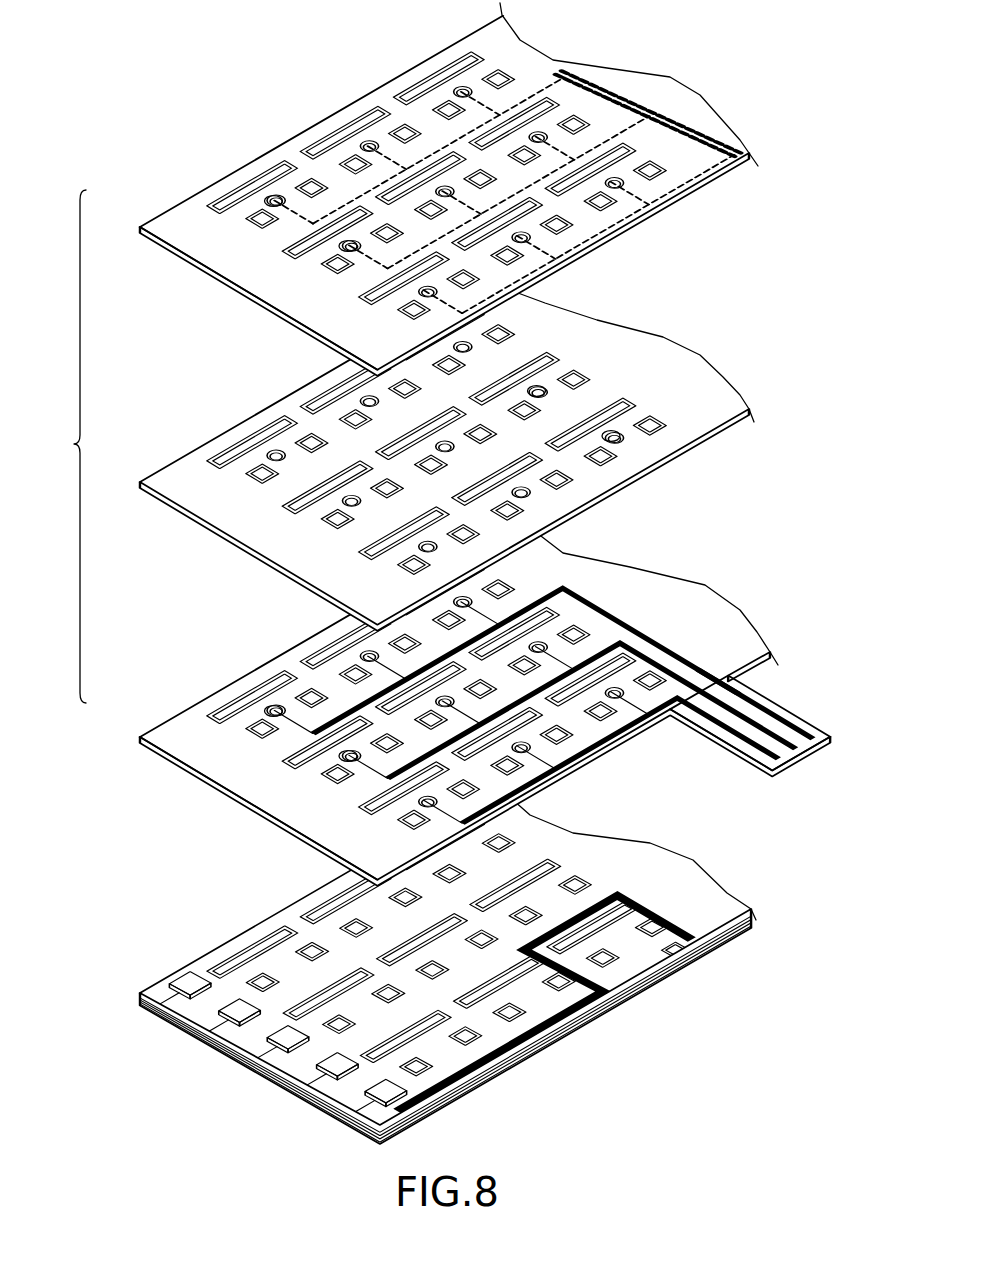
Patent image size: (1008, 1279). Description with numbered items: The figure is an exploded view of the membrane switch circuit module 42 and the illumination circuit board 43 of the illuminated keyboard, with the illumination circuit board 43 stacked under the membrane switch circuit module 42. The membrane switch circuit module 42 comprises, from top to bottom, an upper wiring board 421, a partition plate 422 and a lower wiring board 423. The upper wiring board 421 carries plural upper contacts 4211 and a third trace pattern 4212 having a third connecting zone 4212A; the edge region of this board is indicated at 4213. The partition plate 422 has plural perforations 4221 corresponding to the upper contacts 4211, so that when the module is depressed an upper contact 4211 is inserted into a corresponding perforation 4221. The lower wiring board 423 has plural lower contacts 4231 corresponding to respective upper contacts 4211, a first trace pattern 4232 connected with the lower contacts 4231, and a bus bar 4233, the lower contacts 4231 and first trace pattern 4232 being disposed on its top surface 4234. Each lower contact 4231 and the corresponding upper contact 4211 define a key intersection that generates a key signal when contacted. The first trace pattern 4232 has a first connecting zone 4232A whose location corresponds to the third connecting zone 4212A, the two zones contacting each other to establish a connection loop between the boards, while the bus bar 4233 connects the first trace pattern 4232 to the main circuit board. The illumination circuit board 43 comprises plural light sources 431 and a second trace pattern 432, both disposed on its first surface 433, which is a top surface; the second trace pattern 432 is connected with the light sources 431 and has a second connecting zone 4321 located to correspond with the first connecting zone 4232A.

The membrane switch circuit module 42 is at (63, 446).
The upper wiring board 421 is at (439, 188).
The upper contacts 4211 is at (272, 206).
The third trace pattern 4212 is at (504, 177).
The third connecting zone 4212A is at (647, 113).
The substrate edge 4213 is at (258, 298).
The partition plate 422 is at (184, 479).
The perforations 4221 is at (537, 385).
The lower wiring board 423 is at (500, 719).
The lower contacts 4231 is at (272, 716).
The first trace pattern 4232 is at (543, 724).
The first connecting zone 4232A is at (718, 681).
The bus bar 4233 is at (750, 722).
The top surface 4234 is at (258, 808).
The illumination circuit board 43 is at (453, 956).
The light sources 431 is at (278, 1045).
The second trace pattern 432 is at (444, 962).
The first surface 433 is at (507, 1003).
The second connecting zone 4321 is at (676, 950).